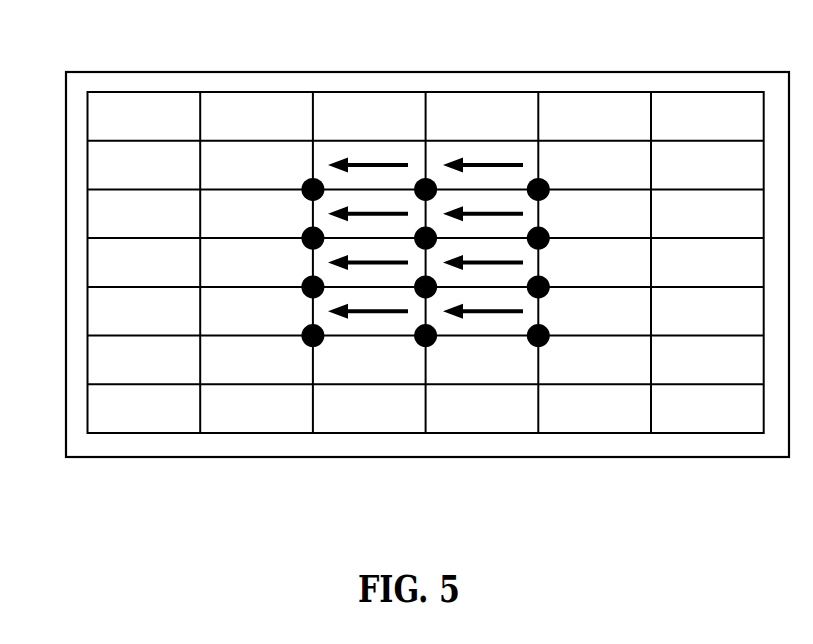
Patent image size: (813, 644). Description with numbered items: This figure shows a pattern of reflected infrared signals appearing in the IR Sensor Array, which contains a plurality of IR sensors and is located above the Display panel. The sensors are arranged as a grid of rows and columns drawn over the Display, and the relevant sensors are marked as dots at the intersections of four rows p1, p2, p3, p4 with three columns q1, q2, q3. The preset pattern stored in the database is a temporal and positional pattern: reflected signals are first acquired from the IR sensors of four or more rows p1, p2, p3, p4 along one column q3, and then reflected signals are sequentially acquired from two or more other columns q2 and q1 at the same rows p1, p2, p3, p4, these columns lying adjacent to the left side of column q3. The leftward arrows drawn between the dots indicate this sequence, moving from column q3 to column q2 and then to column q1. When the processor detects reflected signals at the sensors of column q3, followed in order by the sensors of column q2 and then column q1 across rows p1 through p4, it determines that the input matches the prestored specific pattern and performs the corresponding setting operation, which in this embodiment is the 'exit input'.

The display panel Display is at (560, 457).
The IR sensor array IR Sensor Array is at (267, 435).
The column q1 is at (314, 184).
The column q2 is at (424, 184).
The column q3 is at (536, 184).
The row p1 is at (273, 183).
The row p2 is at (273, 231).
The row p3 is at (273, 280).
The row p4 is at (273, 329).